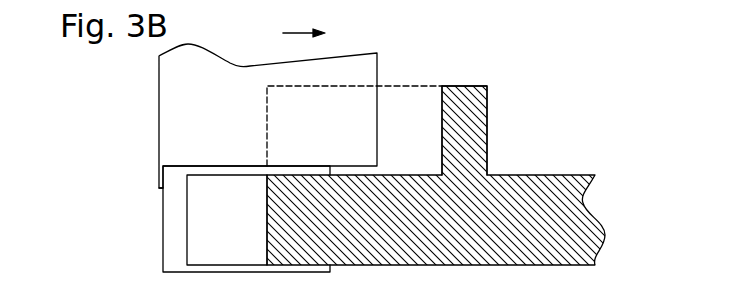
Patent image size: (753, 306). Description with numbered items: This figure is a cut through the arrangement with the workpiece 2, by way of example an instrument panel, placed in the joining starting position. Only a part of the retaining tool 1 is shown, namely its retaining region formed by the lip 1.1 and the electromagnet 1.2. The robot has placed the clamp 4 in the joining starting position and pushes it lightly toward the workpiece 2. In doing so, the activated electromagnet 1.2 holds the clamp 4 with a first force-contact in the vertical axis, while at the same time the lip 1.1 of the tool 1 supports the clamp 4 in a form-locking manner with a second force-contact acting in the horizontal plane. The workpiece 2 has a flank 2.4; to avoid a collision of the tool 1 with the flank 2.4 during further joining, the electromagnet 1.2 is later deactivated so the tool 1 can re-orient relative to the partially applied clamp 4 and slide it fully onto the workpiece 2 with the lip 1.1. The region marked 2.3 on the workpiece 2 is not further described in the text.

The retaining tool 1 is at (172, 118).
The lip 1.1 is at (158, 183).
The electromagnet 1.2 is at (197, 165).
The workpiece 2 is at (596, 232).
The recess / receptacle region 2.3 is at (428, 138).
The flank 2.4 is at (477, 137).
The clamp 4 is at (173, 240).